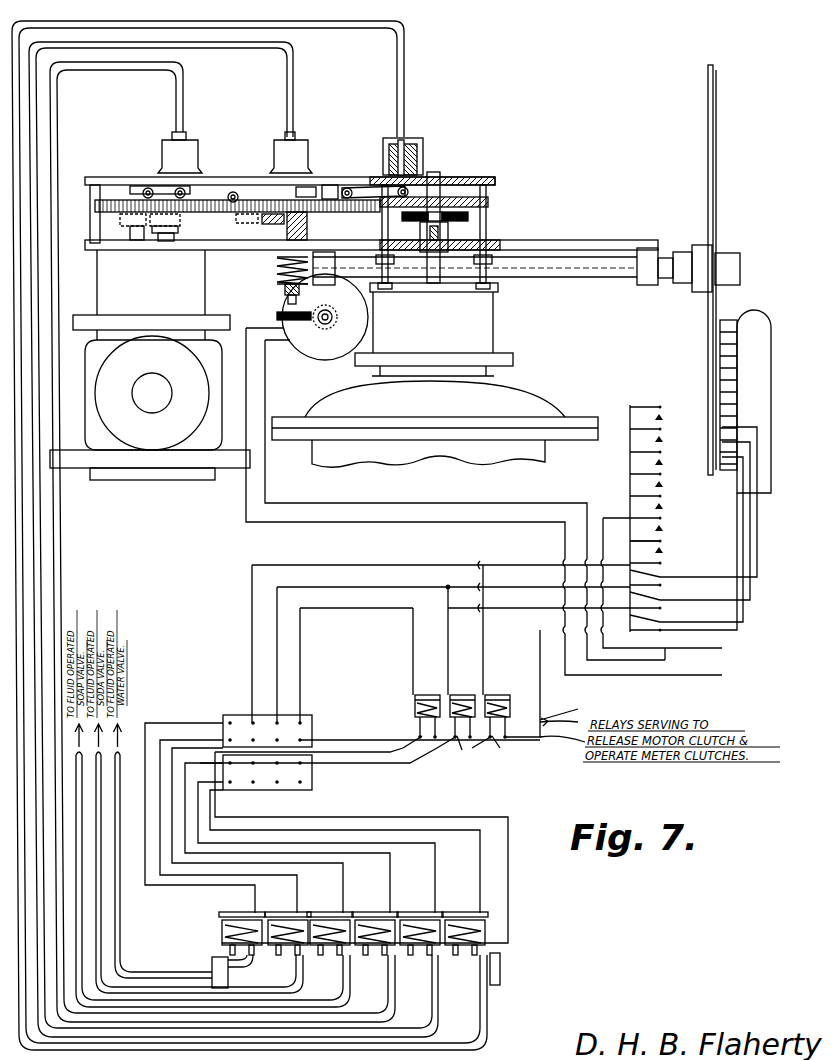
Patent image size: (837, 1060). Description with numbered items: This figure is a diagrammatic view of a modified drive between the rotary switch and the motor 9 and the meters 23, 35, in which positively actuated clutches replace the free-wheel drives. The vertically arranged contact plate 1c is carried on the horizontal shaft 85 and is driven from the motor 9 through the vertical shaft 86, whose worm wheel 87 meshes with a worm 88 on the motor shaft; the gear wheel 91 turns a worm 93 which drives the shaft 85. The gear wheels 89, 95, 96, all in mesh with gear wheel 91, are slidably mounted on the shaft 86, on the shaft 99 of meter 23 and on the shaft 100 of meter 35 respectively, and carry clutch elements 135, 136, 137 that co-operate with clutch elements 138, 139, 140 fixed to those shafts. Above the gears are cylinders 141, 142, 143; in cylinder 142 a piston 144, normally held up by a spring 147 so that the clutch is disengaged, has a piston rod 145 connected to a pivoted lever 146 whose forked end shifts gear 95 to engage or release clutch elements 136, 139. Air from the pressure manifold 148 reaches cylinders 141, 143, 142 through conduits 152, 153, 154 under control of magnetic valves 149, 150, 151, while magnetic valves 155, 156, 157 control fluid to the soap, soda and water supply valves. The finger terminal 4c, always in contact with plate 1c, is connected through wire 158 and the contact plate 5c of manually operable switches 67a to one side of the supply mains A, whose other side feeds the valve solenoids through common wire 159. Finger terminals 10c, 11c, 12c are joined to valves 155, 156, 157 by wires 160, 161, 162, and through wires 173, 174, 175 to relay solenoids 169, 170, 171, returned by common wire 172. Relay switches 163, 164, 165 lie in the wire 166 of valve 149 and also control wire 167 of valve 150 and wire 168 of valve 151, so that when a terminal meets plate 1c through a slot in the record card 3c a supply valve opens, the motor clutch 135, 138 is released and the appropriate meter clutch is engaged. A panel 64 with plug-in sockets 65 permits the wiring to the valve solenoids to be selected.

The cylinder 143 is at (200, 152).
The cylinder 141 is at (305, 152).
The cylinder 142 is at (420, 142).
The piston 144 is at (418, 156).
The spring 147 is at (390, 150).
The piston rod 145 is at (435, 176).
The pivoted lever 146 is at (362, 186).
The gear wheel 89 is at (330, 185).
The gear wheel 96 is at (95, 206).
The clutch element 137 is at (120, 219).
The clutch element 140 is at (176, 225).
The clutch element 135 is at (247, 213).
The clutch element 138 is at (270, 224).
The gear wheel 91 is at (318, 214).
The gear wheel 95 is at (488, 203).
The clutch element 139 is at (468, 218).
The clutch element 136 is at (470, 216).
The meter shaft 99 is at (438, 280).
The meter shaft 100 is at (92, 250).
The horizontal shaft 85 is at (596, 277).
The contact plate 1c is at (708, 154).
The record card 3c is at (714, 168).
The worm 93 is at (277, 262).
The vertical shaft 86 is at (287, 297).
The worm wheel 87 is at (296, 322).
The worm 88 is at (340, 312).
The motor 9 is at (325, 318).
The meter 23 is at (545, 410).
The meter 35 is at (195, 285).
The contact plate 5c is at (632, 541).
The manually operable switches 67a is at (632, 560).
The wire 158 is at (737, 523).
The finger terminal 12c is at (722, 427).
The finger terminal 11c is at (722, 442).
The finger terminal 10c is at (722, 457).
The finger terminal 4c is at (722, 470).
The conduit 152 is at (59, 545).
The conduit 153 is at (37, 585).
The conduit 154 is at (18, 617).
The wire 162 is at (252, 645).
The wire 161 is at (277, 668).
The wire 160 is at (300, 670).
The wire 173 is at (413, 634).
The wire 174 is at (448, 634).
The wire 175 is at (483, 640).
The relay solenoid 169 is at (428, 696).
The relay solenoid 170 is at (462, 696).
The relay solenoid 171 is at (497, 696).
The relay switch 165 is at (505, 712).
The common wire 172 is at (576, 710).
The plug-in sockets 65 is at (300, 723).
The panel 64 is at (305, 785).
The wire 166 is at (333, 740).
The relay switch 163 is at (415, 727).
The relay switch 164 is at (462, 750).
The common wire 159 is at (515, 750).
The wire 167 is at (378, 752).
The wire 168 is at (428, 763).
The magnetic valve 157 is at (240, 922).
The magnetic valve 156 is at (286, 922).
The magnetic valve 155 is at (328, 922).
The magnetic valve 149 is at (373, 922).
The magnetic valve 150 is at (418, 922).
The magnetic valve 151 is at (463, 922).
The pressure manifold 148 is at (500, 972).
The supply mains A is at (704, 660).